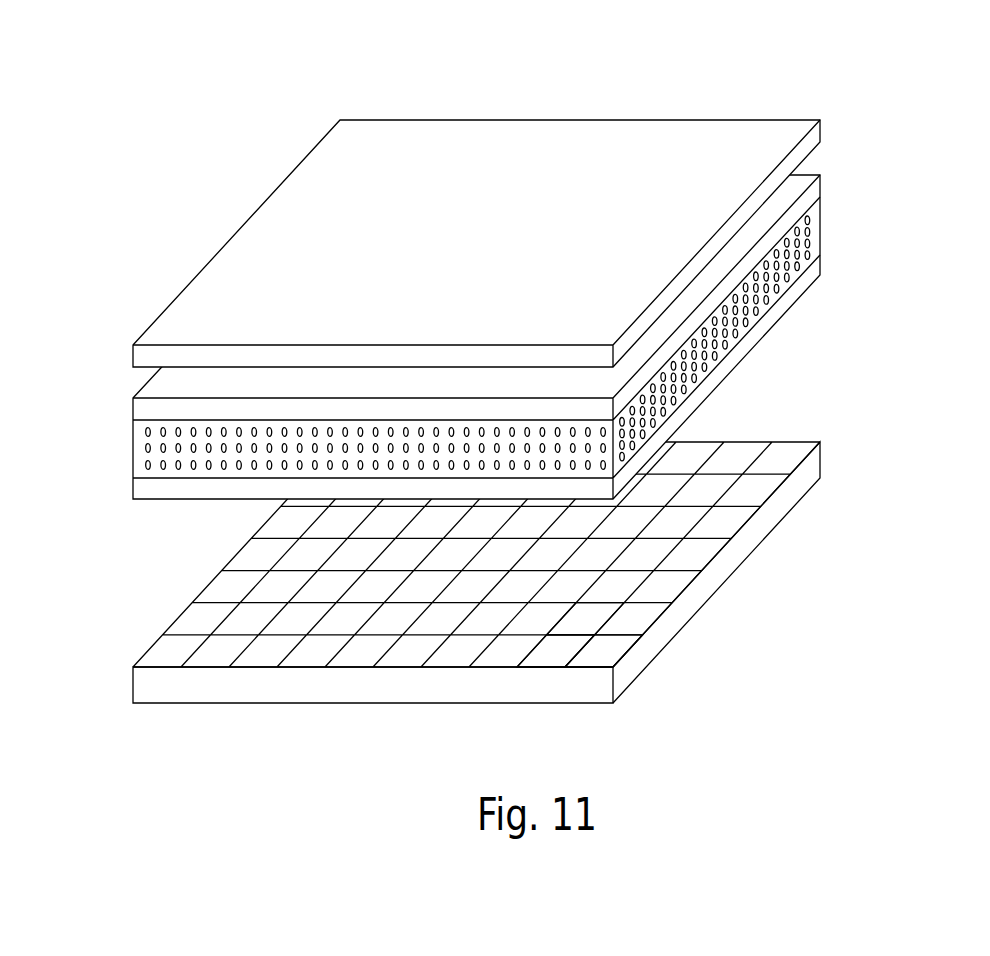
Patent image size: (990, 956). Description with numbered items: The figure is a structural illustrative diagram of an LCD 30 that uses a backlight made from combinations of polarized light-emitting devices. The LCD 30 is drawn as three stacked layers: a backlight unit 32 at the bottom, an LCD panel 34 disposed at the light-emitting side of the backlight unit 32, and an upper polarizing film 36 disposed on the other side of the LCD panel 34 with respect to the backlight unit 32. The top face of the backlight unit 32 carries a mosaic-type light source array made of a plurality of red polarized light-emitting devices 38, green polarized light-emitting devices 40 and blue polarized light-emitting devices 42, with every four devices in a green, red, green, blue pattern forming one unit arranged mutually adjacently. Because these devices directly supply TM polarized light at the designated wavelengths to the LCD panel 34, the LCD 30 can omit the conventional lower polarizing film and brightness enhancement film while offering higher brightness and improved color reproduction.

The LCD 30 is at (872, 117).
The backlight unit 32 is at (132, 676).
The LCD panel 34 is at (123, 398).
The upper polarizing film 36 is at (132, 352).
The red polarized light-emitting device 38 is at (607, 607).
The green polarized light-emitting device 40 is at (563, 658).
The blue polarized light-emitting device 42 is at (622, 645).